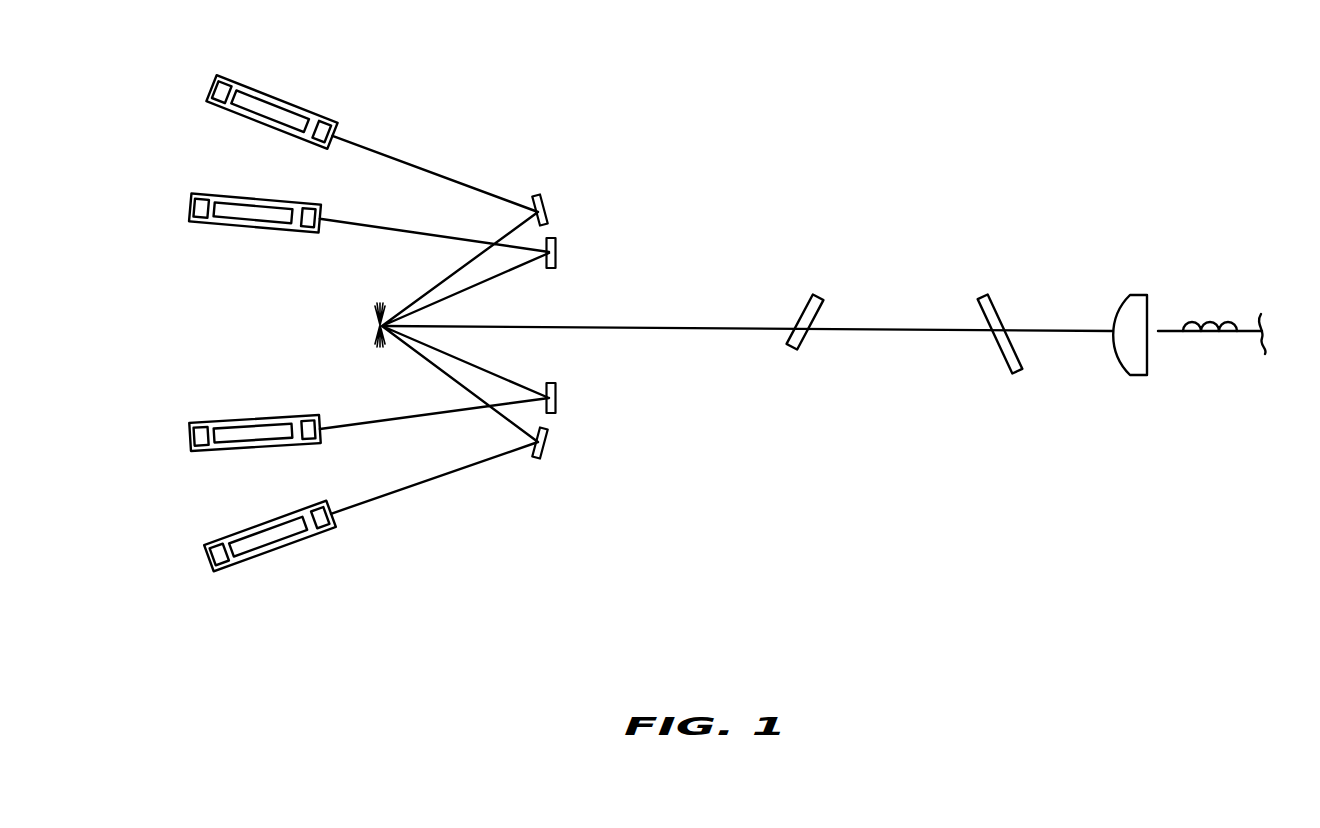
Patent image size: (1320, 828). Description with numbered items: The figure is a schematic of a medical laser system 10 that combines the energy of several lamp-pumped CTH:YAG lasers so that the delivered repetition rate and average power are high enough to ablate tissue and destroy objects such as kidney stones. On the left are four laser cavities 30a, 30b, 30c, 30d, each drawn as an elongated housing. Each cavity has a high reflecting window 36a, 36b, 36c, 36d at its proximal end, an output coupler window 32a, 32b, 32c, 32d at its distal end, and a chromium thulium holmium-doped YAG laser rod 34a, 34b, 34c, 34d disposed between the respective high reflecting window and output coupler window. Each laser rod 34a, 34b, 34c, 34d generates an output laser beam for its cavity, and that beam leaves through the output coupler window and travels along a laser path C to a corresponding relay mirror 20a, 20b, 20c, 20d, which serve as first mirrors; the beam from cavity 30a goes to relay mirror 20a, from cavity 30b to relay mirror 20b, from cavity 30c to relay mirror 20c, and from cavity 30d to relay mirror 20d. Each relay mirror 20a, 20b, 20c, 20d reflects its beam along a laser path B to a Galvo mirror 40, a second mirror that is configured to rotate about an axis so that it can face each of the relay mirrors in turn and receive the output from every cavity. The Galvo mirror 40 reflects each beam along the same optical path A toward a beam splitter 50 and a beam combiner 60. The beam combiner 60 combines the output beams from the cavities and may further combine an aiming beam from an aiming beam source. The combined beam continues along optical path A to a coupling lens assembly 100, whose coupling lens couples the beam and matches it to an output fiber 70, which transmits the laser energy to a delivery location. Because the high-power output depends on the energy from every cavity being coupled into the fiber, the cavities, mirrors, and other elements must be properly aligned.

The medical laser system 10 is at (980, 82).
The relay mirror 20a is at (553, 205).
The relay mirror 20b is at (560, 252).
The relay mirror 20c is at (558, 398).
The relay mirror 20d is at (549, 448).
The laser cavity 30a is at (295, 112).
The laser cavity 30b is at (288, 226).
The laser cavity 30c is at (282, 420).
The laser cavity 30d is at (297, 508).
The output coupler window 32a is at (333, 125).
The output coupler window 32b is at (318, 215).
The output coupler window 32c is at (313, 427).
The output coupler window 32d is at (328, 507).
The CTH:YAG laser rod 34a is at (268, 112).
The CTH:YAG laser rod 34b is at (270, 210).
The CTH:YAG laser rod 34c is at (233, 432).
The CTH:YAG laser rod 34d is at (298, 523).
The high reflecting window 36a is at (208, 90).
The high reflecting window 36b is at (197, 200).
The high reflecting window 36c is at (190, 440).
The high reflecting window 36d is at (208, 553).
The Galvo mirror 40 is at (377, 320).
The beam splitter 50 is at (805, 350).
The beam combiner 60 is at (985, 298).
The output fiber 70 is at (1250, 322).
The coupling lens assembly 100 is at (1140, 318).